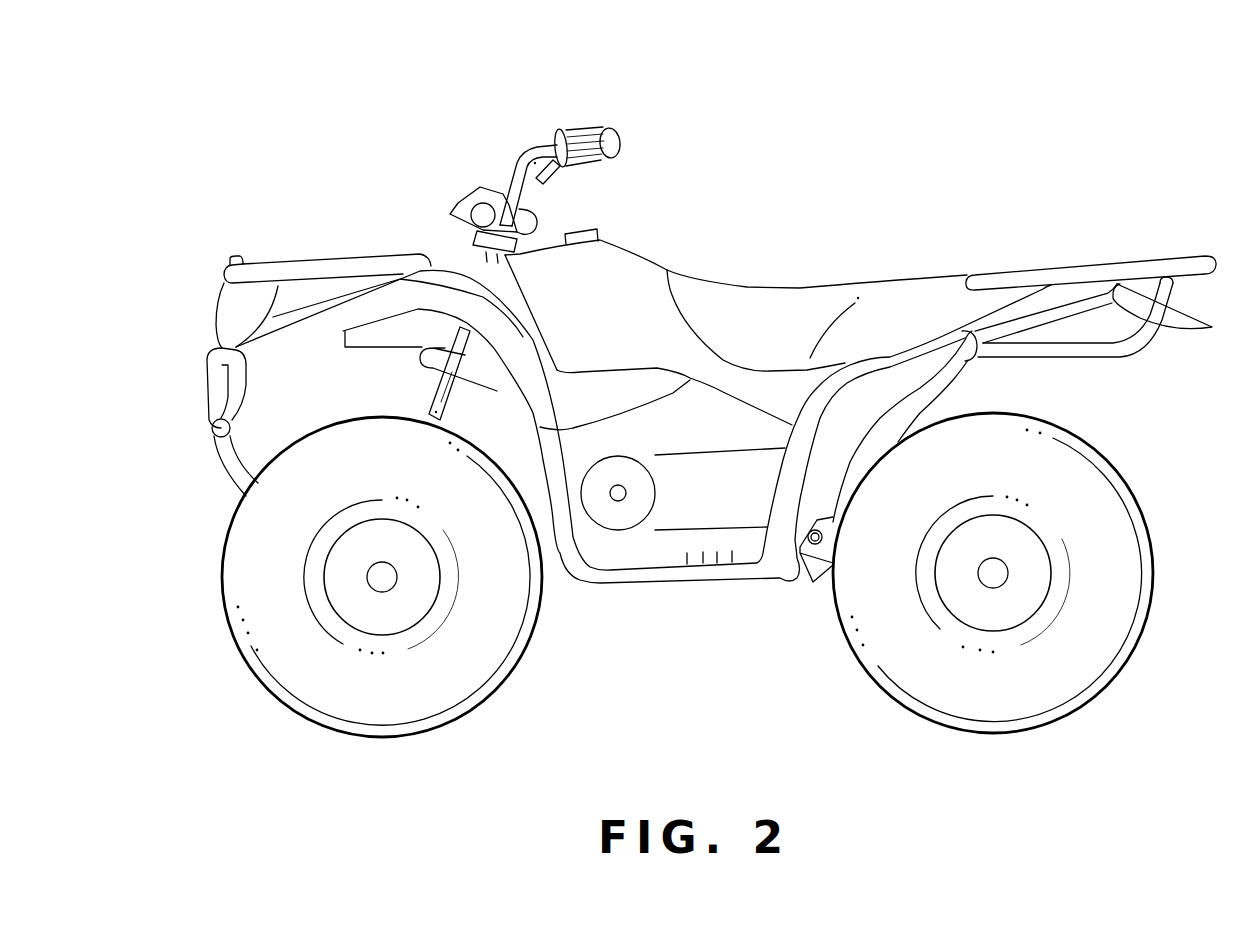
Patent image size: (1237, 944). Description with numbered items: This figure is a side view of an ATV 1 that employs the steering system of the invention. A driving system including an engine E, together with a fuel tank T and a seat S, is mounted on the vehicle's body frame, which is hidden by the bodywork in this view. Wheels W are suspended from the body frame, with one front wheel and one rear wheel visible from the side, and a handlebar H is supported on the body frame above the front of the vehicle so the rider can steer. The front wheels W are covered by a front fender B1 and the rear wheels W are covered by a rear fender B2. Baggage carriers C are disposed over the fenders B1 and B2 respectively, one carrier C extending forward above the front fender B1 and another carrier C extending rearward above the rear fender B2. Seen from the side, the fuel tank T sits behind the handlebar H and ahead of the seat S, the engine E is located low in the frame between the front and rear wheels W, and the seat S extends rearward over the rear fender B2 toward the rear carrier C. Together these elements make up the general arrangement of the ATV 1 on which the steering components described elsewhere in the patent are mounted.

The ATV 1 is at (893, 160).
The handlebar H is at (545, 143).
The baggage carrier C is at (300, 258).
The front fender B1 is at (360, 303).
The rear fender B2 is at (897, 380).
The fuel tank T is at (610, 263).
The seat S is at (797, 297).
The engine E is at (620, 515).
The wheel W is at (483, 657).